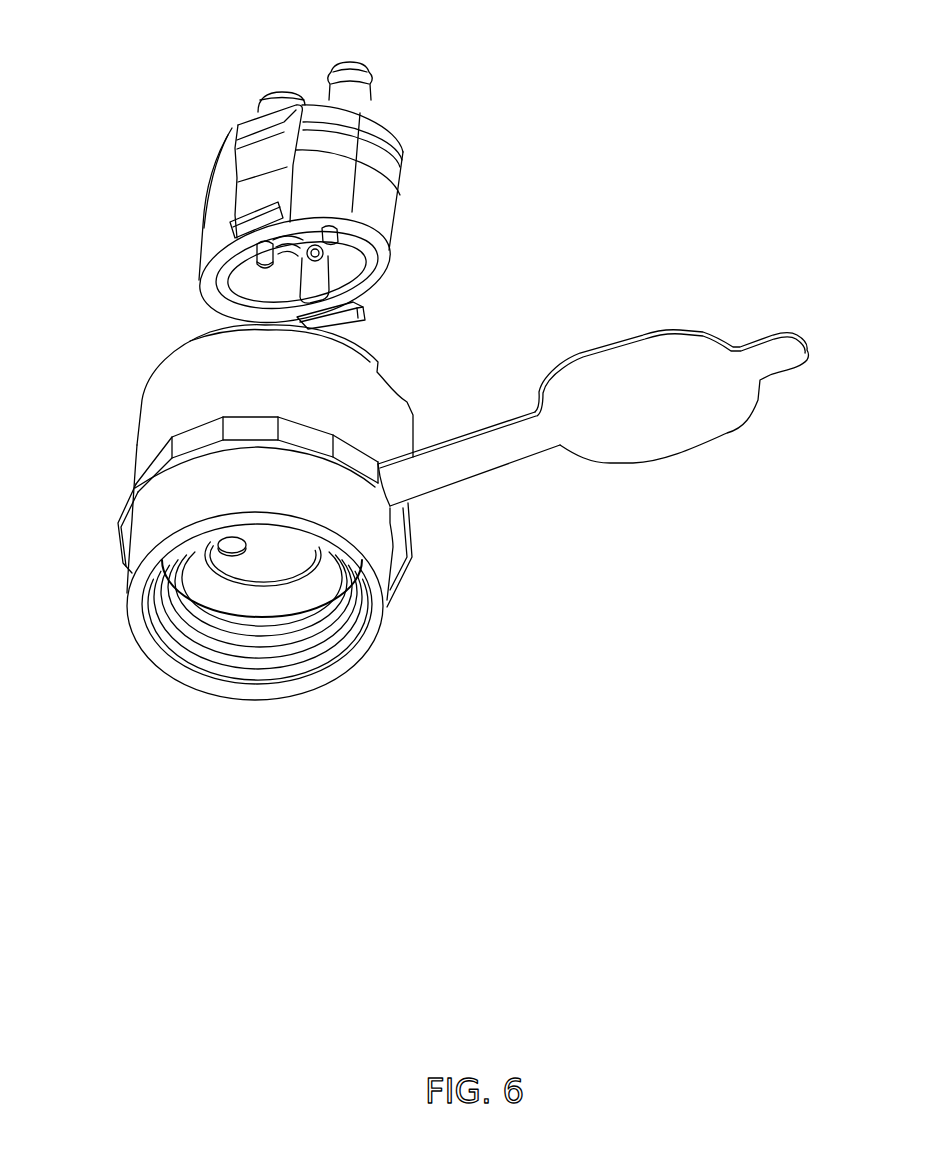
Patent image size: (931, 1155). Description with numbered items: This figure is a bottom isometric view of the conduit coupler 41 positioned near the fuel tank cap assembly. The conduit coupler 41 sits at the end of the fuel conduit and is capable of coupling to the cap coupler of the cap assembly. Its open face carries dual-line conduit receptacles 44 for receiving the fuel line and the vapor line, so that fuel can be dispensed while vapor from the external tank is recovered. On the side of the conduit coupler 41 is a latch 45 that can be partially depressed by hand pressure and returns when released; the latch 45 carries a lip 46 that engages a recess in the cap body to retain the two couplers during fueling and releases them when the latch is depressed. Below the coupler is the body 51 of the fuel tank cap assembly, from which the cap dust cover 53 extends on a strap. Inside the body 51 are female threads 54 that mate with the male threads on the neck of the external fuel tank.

The conduit coupler 41 is at (397, 213).
The dual-line conduit receptacles 44 is at (203, 283).
The latch 45 is at (250, 127).
The lip 46 is at (367, 317).
The body 51 is at (137, 458).
The cap dust cover 53 is at (693, 327).
The female threads 54 is at (218, 673).